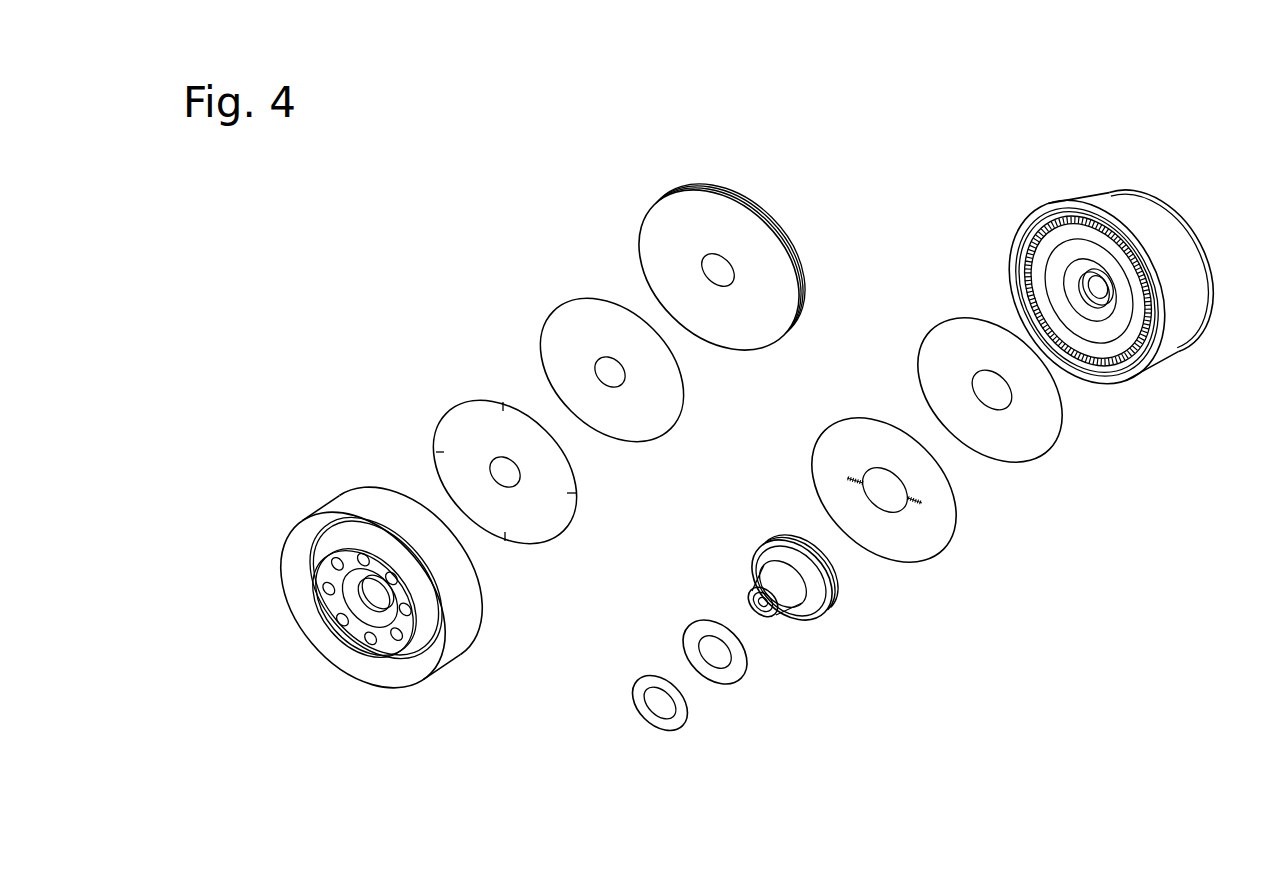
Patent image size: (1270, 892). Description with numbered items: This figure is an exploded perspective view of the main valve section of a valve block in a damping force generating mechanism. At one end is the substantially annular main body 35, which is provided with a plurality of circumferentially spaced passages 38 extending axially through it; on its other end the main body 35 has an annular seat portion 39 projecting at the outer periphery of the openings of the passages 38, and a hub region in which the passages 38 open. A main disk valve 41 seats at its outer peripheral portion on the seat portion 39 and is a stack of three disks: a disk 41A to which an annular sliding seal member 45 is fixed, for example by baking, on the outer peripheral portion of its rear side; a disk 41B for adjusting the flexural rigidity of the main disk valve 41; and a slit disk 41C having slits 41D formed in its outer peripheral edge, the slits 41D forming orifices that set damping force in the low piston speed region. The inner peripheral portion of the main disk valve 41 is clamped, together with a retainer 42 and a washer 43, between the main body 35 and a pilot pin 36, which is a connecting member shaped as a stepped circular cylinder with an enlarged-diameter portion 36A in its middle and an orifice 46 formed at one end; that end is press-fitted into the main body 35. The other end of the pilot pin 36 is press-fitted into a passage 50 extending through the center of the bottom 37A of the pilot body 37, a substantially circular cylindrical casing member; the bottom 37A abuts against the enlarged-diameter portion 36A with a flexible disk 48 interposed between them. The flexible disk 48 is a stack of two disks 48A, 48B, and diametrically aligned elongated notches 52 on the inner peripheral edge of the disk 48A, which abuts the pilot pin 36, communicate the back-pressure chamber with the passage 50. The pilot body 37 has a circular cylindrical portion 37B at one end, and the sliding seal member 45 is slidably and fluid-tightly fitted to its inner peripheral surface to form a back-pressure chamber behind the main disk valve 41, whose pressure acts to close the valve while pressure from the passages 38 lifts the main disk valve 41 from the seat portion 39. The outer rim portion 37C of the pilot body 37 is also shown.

The main body 35 is at (381, 587).
The pilot pin 36 is at (781, 599).
The enlarged-diameter portion 36A is at (827, 600).
The pilot body 37 is at (1088, 291).
The bottom 37A is at (1048, 287).
The circular cylindrical portion 37B is at (1033, 225).
The tire of second wheel 37C is at (1173, 207).
The passages 38 is at (360, 653).
The seat portion 39 is at (342, 640).
The main disk valve 41 is at (637, 131).
The disk 41A is at (713, 250).
The disk 41B is at (558, 333).
The slit disk 41C is at (445, 432).
The slits 41D is at (572, 495).
The retainer 42 is at (657, 722).
The washer 43 is at (713, 677).
The sliding seal member 45 is at (727, 192).
The orifice 46 is at (752, 603).
The flexible disk 48 is at (1077, 520).
The disk 48A is at (902, 500).
The disk 48B is at (997, 447).
The passage 50 is at (1087, 310).
The notches 52 is at (915, 507).